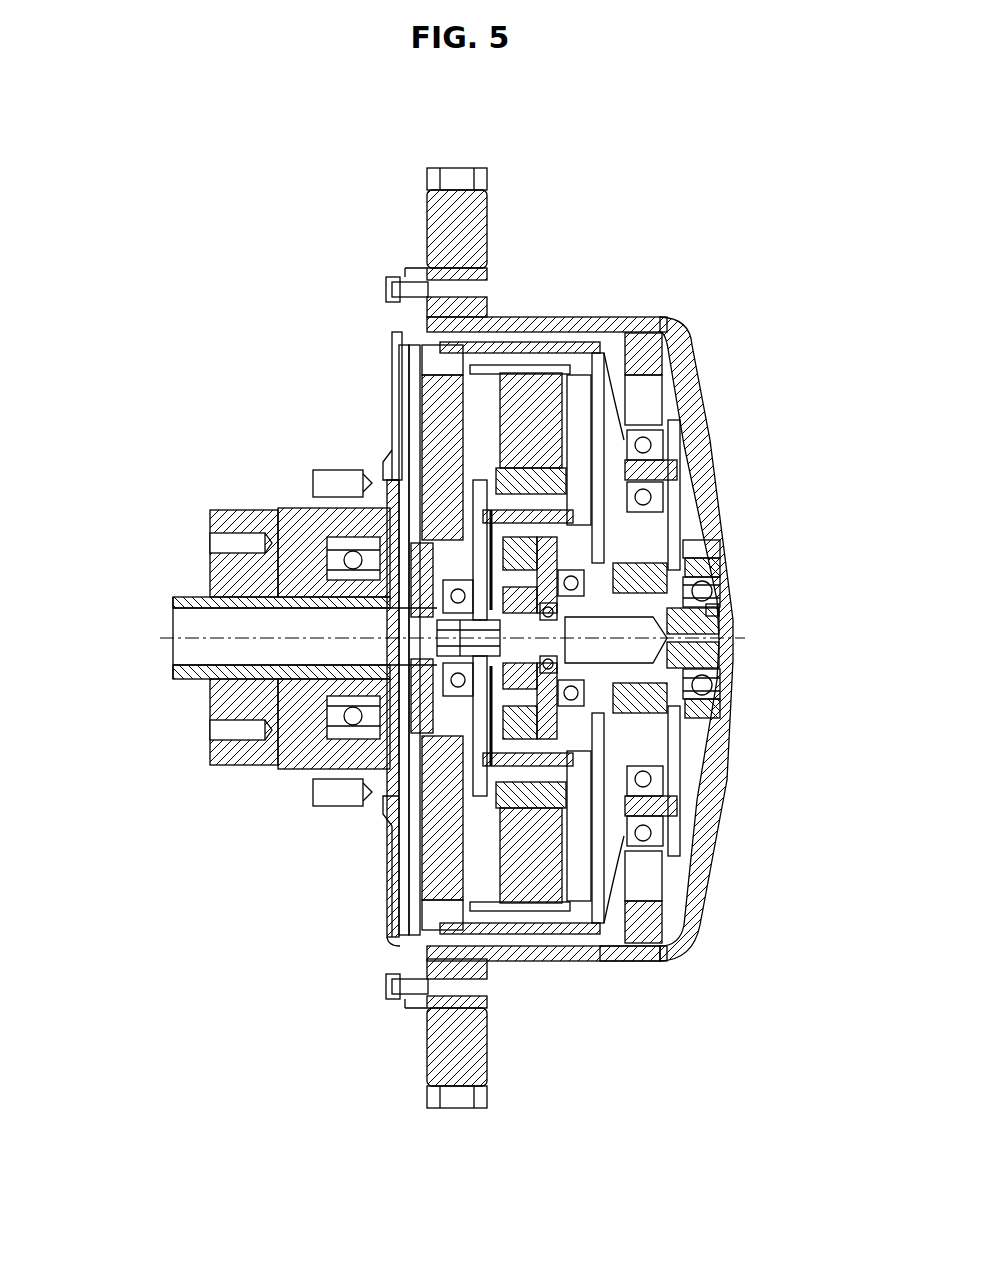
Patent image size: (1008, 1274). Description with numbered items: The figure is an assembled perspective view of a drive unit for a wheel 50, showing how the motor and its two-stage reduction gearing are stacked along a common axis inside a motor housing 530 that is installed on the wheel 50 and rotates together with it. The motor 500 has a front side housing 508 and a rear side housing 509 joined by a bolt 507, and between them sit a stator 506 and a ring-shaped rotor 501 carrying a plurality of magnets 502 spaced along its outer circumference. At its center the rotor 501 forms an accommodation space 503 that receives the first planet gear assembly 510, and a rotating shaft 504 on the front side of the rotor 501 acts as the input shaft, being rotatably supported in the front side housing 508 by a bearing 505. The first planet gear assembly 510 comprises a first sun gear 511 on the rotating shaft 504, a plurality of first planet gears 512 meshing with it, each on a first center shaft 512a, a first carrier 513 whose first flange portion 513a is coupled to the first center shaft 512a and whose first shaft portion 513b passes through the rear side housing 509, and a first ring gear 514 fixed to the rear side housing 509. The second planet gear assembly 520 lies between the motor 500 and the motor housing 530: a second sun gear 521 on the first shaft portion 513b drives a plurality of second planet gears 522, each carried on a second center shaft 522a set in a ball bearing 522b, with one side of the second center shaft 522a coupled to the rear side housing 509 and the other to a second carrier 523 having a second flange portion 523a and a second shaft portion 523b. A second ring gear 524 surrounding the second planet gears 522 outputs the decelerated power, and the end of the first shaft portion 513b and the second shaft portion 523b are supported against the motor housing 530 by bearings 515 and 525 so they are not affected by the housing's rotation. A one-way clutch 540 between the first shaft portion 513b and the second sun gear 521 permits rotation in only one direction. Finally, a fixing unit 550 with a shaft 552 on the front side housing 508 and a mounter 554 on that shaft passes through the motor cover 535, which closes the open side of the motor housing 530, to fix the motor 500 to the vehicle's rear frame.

The wheel 50 is at (428, 220).
The motor 500 is at (522, 328).
The rotor 501 is at (393, 805).
The magnets 502 is at (400, 848).
The accommodation space 503 is at (353, 548).
The rotating shaft 504 is at (420, 617).
The bearing 505 is at (330, 675).
The stator 506 is at (437, 405).
The bolt 507 is at (576, 450).
The front side housing 508 is at (398, 407).
The rear side housing 509 is at (580, 348).
The first planet gear assembly 510 is at (648, 333).
The first sun gear 511 is at (320, 772).
The first planet gears 512 is at (513, 432).
The first center shaft 512a is at (718, 512).
The first carrier 513 is at (788, 563).
The first flange portion 513a is at (716, 556).
The first shaft portion 513b is at (717, 584).
The first ring gear 514 is at (714, 470).
The bearing 515 is at (723, 636).
The second planet gear assembly 520 is at (724, 732).
The second sun gear 521 is at (710, 768).
The second planet gears 522 is at (703, 883).
The second center shaft 522a is at (720, 807).
The ball bearing 522b is at (710, 847).
The second carrier 523 is at (784, 688).
The second flange portion 523a is at (720, 697).
The second shaft portion 523b is at (727, 680).
The second ring gear 524 is at (695, 938).
The bearing 525 is at (723, 609).
The motor housing 530 is at (723, 525).
The motor cover 535 is at (395, 357).
The one-way clutch 540 is at (720, 651).
The fixing unit 550 is at (214, 637).
The shaft 552 is at (245, 631).
The mounter 554 is at (212, 568).